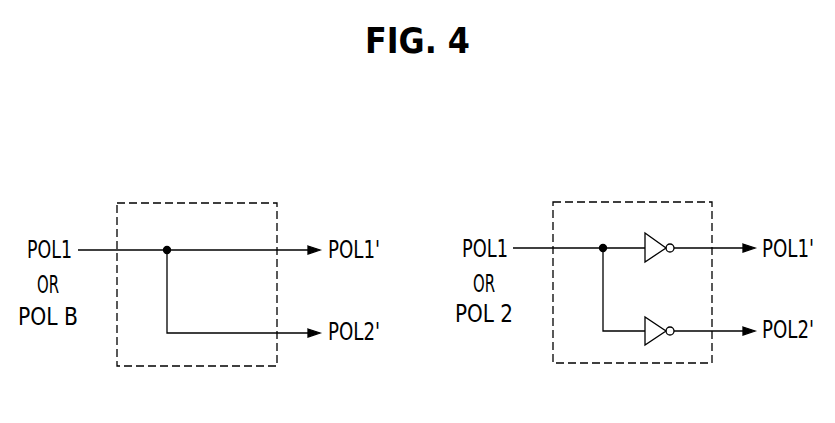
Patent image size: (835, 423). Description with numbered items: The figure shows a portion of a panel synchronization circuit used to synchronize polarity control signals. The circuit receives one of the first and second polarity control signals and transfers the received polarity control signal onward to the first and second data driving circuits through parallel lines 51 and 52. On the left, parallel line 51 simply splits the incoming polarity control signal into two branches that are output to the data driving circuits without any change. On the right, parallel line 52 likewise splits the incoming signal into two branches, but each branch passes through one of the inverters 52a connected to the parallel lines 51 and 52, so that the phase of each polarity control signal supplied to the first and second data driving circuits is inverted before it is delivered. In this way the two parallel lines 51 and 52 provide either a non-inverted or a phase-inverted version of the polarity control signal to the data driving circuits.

The parallel line 51 is at (197, 203).
The parallel line 52 is at (634, 273).
The inverter 52a is at (656, 260).